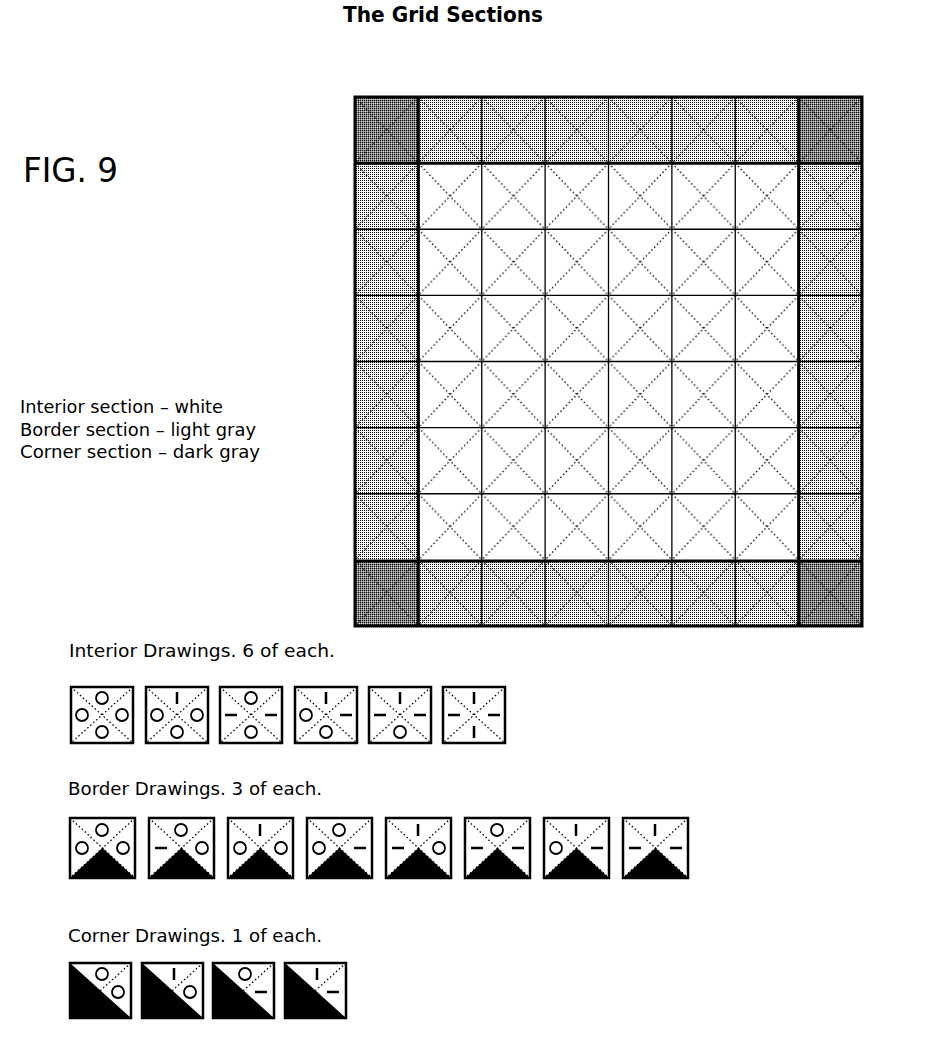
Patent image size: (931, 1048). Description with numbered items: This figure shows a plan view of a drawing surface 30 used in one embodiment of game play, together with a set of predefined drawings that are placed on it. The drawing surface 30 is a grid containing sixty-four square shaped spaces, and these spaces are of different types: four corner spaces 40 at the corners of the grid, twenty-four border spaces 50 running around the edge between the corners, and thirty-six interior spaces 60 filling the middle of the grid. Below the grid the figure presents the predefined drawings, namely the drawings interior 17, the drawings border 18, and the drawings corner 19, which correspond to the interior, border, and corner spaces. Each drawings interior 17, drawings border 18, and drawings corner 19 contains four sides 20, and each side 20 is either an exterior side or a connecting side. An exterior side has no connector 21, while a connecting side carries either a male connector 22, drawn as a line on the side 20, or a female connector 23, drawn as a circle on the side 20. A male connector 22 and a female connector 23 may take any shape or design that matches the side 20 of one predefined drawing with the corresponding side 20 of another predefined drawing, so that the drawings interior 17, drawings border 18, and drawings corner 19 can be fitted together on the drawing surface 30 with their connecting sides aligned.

The drawings interior 17 is at (80, 691).
The drawings border 18 is at (80, 822).
The drawings corner 19 is at (80, 967).
The side 20 is at (477, 818).
The connector 21 is at (497, 889).
The male connector 22 is at (515, 823).
The female connector 23 is at (512, 792).
The drawing surface 30 is at (608, 334).
The corner spaces 40 is at (383, 104).
The border spaces 50 is at (510, 101).
The interior spaces 60 is at (575, 177).